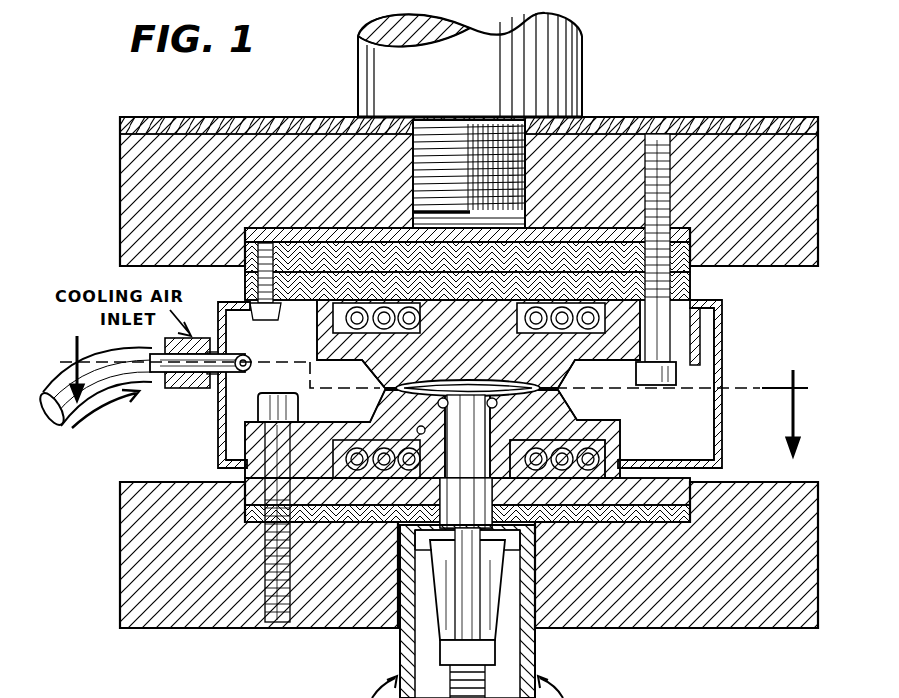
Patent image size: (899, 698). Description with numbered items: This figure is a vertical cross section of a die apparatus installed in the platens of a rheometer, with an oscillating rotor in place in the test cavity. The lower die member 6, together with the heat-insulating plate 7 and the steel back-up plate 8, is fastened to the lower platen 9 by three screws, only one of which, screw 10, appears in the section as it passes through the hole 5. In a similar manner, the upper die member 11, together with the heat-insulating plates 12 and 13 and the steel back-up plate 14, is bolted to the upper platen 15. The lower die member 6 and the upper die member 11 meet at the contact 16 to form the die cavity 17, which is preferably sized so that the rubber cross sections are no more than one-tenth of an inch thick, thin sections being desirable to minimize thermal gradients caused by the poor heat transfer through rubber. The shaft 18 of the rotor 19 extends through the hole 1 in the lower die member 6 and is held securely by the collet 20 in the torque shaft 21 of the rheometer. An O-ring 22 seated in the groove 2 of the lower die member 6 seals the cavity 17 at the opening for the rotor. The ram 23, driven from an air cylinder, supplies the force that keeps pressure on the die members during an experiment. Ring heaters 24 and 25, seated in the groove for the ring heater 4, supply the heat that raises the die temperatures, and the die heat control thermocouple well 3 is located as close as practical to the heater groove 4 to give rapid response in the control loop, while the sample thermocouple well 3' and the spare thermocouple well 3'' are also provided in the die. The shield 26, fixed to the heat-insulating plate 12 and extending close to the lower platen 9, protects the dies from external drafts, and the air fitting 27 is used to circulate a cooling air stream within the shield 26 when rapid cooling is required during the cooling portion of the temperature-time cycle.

The hole 1 is at (485, 455).
The groove 2 is at (422, 413).
The die heat control thermocouple well 3 is at (453, 434).
The sample thermocouple well 3' is at (478, 344).
The spare thermocouple well 3'' is at (448, 429).
The groove for the ring heater 4 is at (335, 320).
The hole 5 is at (668, 340).
The lower die member 6 is at (232, 438).
The heat-insulating plate 7 is at (692, 479).
The steel back-up plate 8 is at (653, 524).
The lower platen 9 is at (160, 550).
The screw 10 is at (245, 398).
The upper die member 11 is at (712, 344).
The heat-insulating plate 12 is at (692, 290).
The heat-insulating plate 13 is at (258, 268).
The steel back-up plate 14 is at (692, 240).
The upper platen 15 is at (788, 175).
The contact 16 is at (564, 396).
The die cavity 17 is at (385, 384).
The shaft 18 is at (467, 495).
The rotor 19 is at (474, 382).
The collet 20 is at (402, 638).
The torque shaft 21 is at (520, 652).
The O-ring 22 is at (498, 400).
The ram 23 is at (395, 76).
The ring heater 24 is at (565, 470).
The ring heater 25 is at (578, 332).
The shield 26 is at (723, 432).
The air fitting 27 is at (165, 385).